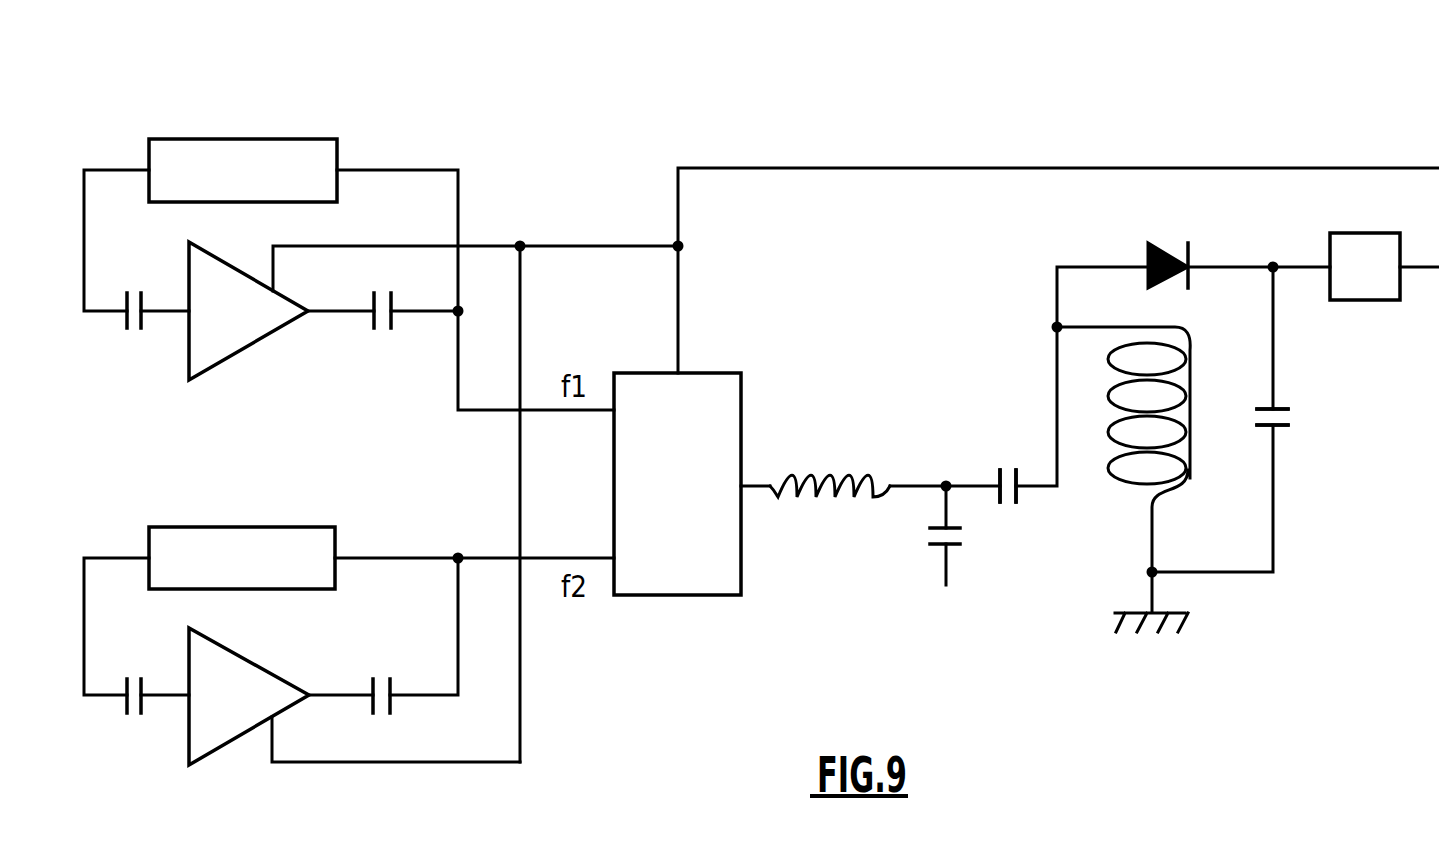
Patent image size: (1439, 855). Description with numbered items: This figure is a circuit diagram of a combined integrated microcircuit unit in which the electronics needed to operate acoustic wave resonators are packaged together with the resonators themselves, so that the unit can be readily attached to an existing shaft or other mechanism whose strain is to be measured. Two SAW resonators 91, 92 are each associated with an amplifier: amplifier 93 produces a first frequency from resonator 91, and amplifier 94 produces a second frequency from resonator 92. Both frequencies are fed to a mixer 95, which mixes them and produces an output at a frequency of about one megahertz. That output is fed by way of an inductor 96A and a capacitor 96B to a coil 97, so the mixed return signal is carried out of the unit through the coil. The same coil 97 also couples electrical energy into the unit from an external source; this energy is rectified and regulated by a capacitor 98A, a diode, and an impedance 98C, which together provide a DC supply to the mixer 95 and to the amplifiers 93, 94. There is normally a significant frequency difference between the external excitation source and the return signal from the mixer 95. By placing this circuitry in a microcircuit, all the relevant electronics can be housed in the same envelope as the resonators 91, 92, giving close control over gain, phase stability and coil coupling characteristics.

The SAW resonator 91 is at (243, 170).
The SAW resonator 92 is at (242, 558).
The amplifier 93 is at (248, 311).
The amplifier 94 is at (249, 696).
The mixer 95 is at (677, 484).
The inductor 96A is at (830, 482).
The capacitor 96B is at (1020, 476).
The coil 97 is at (1142, 483).
The capacitor 98A is at (1283, 428).
The impedance 98C is at (1348, 238).